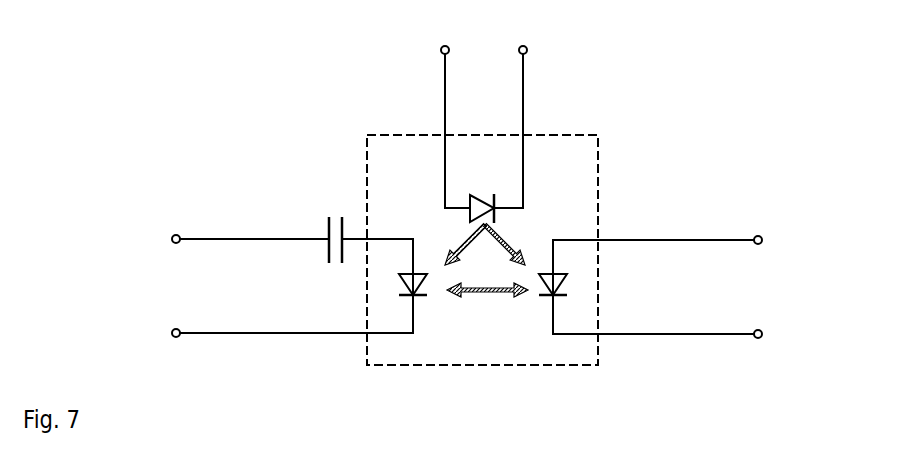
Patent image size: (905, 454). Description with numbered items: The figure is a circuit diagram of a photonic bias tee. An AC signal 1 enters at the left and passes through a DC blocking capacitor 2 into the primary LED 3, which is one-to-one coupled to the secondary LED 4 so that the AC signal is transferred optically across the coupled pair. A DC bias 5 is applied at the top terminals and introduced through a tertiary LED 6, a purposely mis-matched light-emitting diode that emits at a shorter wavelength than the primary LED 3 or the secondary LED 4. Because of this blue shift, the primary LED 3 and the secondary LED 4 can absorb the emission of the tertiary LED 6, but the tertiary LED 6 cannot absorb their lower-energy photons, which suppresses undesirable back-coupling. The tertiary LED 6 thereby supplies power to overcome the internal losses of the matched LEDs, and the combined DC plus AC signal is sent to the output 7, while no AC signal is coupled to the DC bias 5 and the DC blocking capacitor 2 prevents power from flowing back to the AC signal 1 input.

The AC signal 1 is at (260, 286).
The DC blocking capacitor 2 is at (340, 221).
The primary LED 3 is at (427, 300).
The secondary LED 4 is at (544, 300).
The DC bias 5 is at (482, 108).
The tertiary LED 6 is at (483, 189).
The output 7 is at (682, 287).